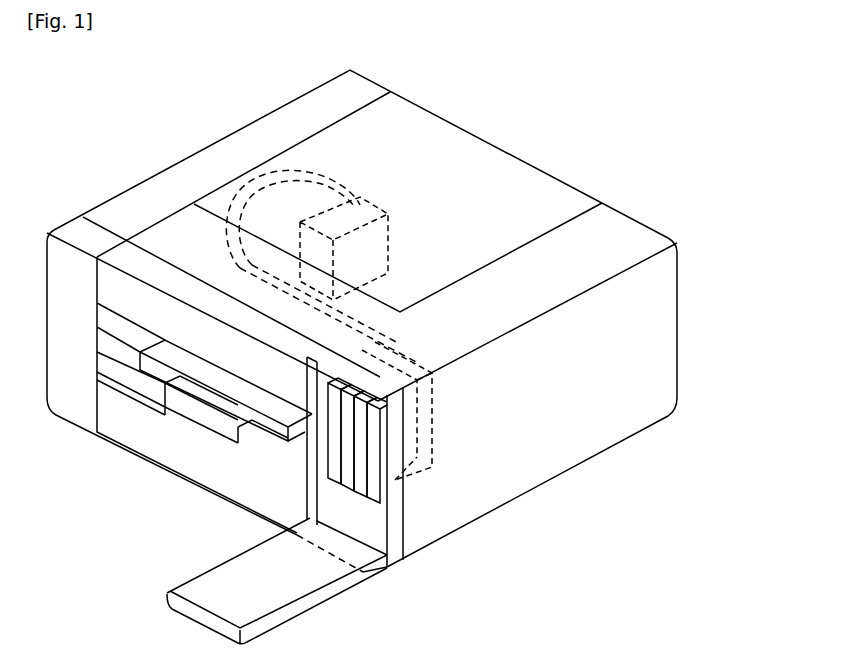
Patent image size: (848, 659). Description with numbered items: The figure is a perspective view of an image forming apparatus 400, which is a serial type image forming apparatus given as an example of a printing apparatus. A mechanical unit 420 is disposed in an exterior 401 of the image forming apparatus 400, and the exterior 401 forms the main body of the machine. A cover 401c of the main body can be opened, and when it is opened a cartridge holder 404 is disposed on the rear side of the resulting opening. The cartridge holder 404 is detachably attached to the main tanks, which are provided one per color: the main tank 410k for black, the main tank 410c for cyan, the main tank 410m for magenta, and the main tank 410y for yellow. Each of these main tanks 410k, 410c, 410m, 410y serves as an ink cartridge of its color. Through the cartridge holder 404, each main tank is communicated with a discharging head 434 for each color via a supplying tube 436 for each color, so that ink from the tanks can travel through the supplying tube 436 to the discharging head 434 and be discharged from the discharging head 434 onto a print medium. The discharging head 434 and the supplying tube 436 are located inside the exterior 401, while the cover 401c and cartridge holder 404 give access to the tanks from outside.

The image forming apparatus 400 is at (600, 96).
The exterior 401 is at (166, 162).
The cover 401c is at (316, 608).
The cartridge holder 404 is at (435, 427).
The main tank 410k is at (330, 466).
The main tank 410c is at (340, 474).
The main tank 410m is at (352, 481).
The main tank 410y is at (364, 488).
The mechanical unit 420 is at (448, 203).
The discharging head 434 is at (363, 196).
The supplying tube 436 is at (262, 165).